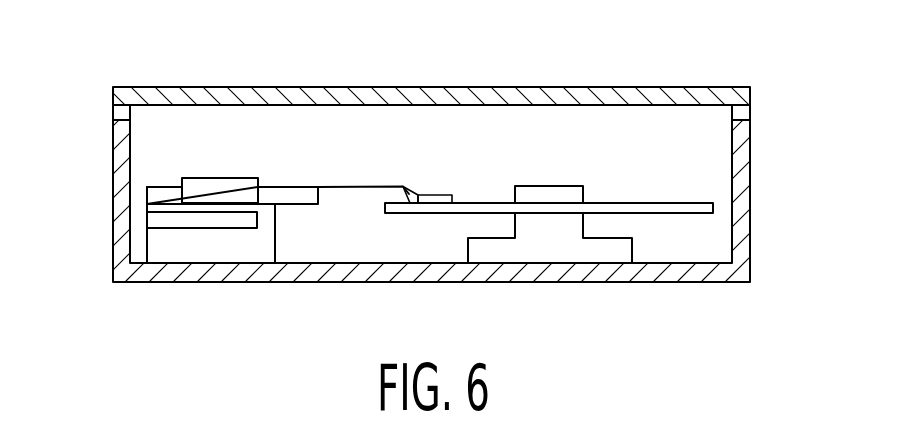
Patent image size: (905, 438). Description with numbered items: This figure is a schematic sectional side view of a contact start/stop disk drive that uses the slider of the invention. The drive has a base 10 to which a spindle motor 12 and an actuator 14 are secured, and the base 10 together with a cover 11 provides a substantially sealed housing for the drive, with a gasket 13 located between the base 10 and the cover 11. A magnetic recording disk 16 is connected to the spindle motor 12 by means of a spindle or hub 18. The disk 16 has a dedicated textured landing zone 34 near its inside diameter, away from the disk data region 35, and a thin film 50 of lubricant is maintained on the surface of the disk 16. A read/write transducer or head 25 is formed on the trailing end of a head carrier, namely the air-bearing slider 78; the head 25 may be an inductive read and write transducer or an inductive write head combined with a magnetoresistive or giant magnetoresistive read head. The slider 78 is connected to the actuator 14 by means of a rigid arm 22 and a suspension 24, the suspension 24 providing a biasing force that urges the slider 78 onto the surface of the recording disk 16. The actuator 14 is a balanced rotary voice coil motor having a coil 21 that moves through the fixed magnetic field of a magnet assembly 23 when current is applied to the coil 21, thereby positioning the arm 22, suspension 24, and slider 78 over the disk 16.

The base 10 is at (675, 272).
The cover 11 is at (150, 96).
The spindle motor 12 is at (563, 250).
The gasket 13 is at (750, 112).
The actuator 14 is at (198, 252).
The magnetic recording disk 16 is at (713, 212).
The spindle or hub 18 is at (548, 186).
The coil 21 is at (193, 182).
The rigid arm 22 is at (285, 193).
The magnet assembly 23 is at (157, 217).
The suspension 24 is at (333, 186).
The read/write transducer or head 25 is at (409, 193).
The textured landing zone 34 is at (608, 203).
The disk data region 35 is at (655, 205).
The thin film of lubricant 50 is at (692, 205).
The air-bearing slider 78 is at (443, 194).